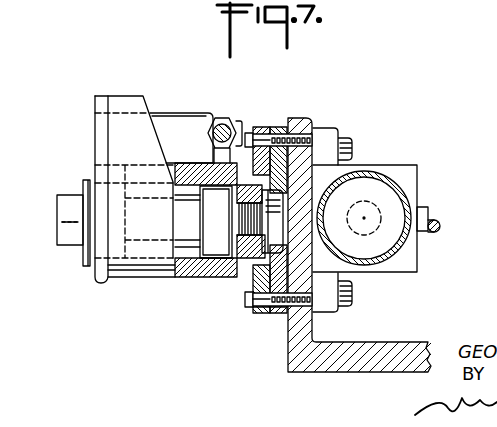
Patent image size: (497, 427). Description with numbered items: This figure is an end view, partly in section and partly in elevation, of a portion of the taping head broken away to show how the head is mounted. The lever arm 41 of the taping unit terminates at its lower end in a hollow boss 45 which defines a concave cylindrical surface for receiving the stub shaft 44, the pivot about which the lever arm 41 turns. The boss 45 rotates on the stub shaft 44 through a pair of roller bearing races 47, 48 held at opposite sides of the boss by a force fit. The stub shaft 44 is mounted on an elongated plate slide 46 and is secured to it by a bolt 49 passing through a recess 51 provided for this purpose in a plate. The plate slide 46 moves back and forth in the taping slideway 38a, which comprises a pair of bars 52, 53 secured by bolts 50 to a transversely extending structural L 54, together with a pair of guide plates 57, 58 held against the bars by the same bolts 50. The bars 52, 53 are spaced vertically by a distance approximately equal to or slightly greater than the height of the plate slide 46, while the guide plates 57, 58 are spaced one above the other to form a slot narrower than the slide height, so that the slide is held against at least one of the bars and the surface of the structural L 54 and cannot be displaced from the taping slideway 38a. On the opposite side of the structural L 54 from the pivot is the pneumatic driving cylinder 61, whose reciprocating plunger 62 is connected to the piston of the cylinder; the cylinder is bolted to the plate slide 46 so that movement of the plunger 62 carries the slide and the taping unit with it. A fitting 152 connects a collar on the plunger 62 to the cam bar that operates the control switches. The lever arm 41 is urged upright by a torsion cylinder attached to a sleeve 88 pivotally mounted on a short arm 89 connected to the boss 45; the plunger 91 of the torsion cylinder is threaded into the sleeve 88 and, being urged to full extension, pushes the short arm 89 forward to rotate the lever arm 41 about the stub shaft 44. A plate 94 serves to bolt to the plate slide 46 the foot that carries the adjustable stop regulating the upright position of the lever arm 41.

The lever arm 41 is at (106, 98).
The stub shaft 44 is at (60, 220).
The hollow boss 45 is at (138, 272).
The plate slide 46 is at (340, 140).
The roller bearing race 47 is at (206, 222).
The roller bearing race 48 is at (118, 170).
The bolt 49 is at (233, 236).
The bolts 50 is at (292, 135).
The recess 51 is at (324, 195).
The bar 52 is at (283, 313).
The bar 53 is at (283, 127).
The structural L 54 is at (322, 366).
The guide plate 57 is at (258, 272).
The guide plate 58 is at (262, 127).
The pneumatic driving cylinder 61 is at (410, 200).
The reciprocating plunger 62 is at (363, 236).
The sleeve 88 is at (225, 117).
The short arm 89 is at (172, 113).
The plunger 91 is at (212, 133).
The plate 94 is at (252, 188).
The fitting 152 is at (432, 220).
The taping slideway 38a is at (263, 326).